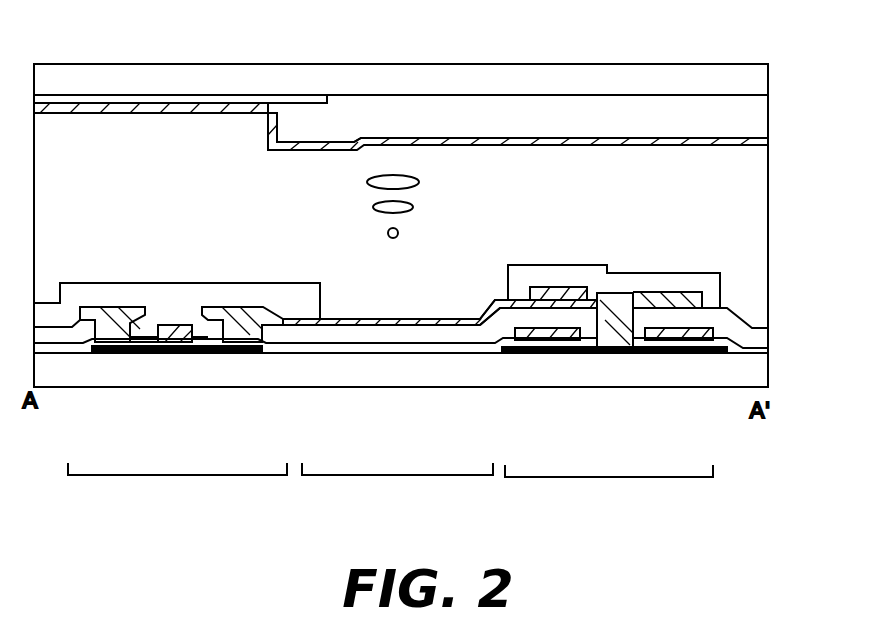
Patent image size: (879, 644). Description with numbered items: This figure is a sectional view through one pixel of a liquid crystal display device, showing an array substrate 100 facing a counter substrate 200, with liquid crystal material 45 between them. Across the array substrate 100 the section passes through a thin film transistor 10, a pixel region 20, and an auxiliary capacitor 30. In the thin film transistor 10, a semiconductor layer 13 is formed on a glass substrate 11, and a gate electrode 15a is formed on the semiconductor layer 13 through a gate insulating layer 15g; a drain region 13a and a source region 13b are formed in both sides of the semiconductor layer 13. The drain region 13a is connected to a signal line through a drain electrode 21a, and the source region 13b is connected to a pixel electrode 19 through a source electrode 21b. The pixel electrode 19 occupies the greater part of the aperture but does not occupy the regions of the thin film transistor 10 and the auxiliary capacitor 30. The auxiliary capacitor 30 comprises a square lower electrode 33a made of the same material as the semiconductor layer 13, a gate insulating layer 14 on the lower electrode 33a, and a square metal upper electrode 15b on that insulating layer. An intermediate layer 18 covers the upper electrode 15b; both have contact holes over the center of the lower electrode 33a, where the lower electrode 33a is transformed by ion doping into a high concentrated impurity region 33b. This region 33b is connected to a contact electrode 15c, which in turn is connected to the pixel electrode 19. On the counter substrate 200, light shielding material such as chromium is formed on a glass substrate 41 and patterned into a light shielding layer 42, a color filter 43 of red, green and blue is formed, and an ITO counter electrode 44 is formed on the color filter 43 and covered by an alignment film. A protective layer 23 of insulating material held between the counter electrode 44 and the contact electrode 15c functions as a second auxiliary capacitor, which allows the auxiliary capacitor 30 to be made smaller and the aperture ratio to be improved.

The counter substrate 200 is at (790, 133).
The array substrate 100 is at (790, 337).
The glass substrate 41 is at (76, 75).
The light shielding layer 42 is at (152, 95).
The color filter 43 is at (400, 115).
The counter electrode 44 is at (560, 138).
The liquid crystal molecules 45 is at (365, 195).
The glass substrate 11 is at (70, 390).
The semiconductor layer 13 is at (177, 353).
The drain region 13a is at (117, 353).
The source region 13b is at (243, 353).
The gate insulating layer 14 is at (363, 350).
The gate electrode 15a is at (177, 330).
The upper electrode 15b is at (592, 296).
The contact electrode 15c is at (558, 290).
The gate insulating layer 15g is at (150, 340).
The intermediate layer 18 is at (432, 333).
The pixel electrode 19 is at (486, 302).
The drain electrode 21a is at (102, 325).
The source electrode 21b is at (242, 320).
The protective layer 23 is at (45, 315).
The lower electrode 33a is at (538, 353).
The high concentrated impurity region 33b is at (610, 353).
The thin film transistor 10 is at (213, 506).
The pixel region 20 is at (397, 495).
The auxiliary capacitor 30 is at (609, 492).